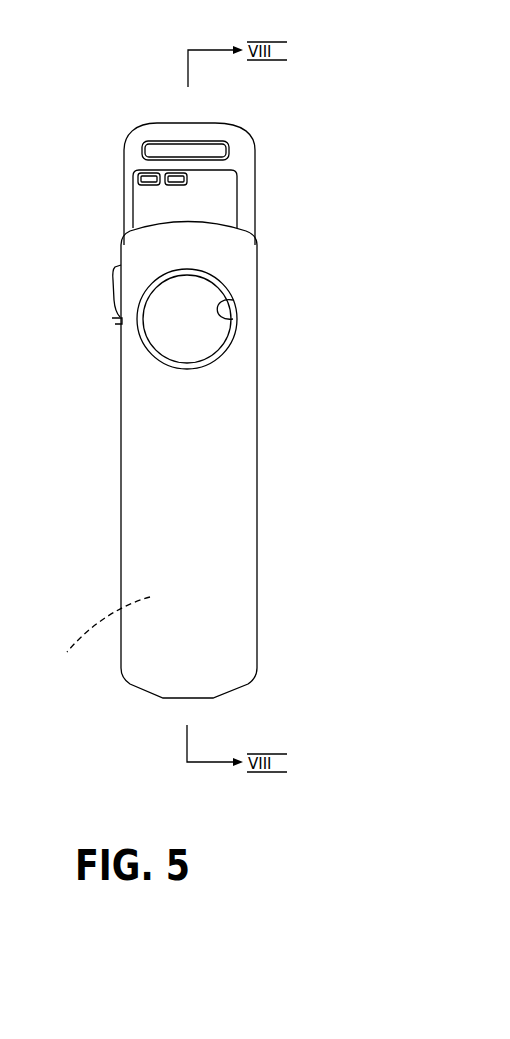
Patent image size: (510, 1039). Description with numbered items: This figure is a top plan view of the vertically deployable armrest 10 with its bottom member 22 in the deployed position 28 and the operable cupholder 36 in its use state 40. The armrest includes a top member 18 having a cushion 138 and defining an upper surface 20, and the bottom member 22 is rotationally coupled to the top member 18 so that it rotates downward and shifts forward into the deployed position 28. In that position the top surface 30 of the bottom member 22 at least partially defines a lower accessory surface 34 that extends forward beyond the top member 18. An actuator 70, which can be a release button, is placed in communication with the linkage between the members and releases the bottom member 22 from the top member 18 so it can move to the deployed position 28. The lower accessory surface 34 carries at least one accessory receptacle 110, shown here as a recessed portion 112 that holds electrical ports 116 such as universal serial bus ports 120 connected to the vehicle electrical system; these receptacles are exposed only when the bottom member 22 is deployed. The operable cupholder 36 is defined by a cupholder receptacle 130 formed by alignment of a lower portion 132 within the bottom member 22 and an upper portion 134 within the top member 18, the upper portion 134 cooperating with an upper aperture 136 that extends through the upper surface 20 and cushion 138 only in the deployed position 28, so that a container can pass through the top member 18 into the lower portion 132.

The vertically deployable armrest 10 is at (279, 548).
The top member 18 is at (237, 597).
The upper surface 20 is at (187, 660).
The bottom member 22 is at (127, 183).
The deployed position 28 is at (259, 679).
The top surface 30 is at (245, 175).
The lower accessory surface 34 is at (248, 198).
The operable cupholder 36 is at (239, 333).
The use state 40 is at (231, 371).
The actuator 70 is at (112, 282).
The accessory receptacle 110 is at (155, 148).
The recessed portion 112 is at (247, 138).
The electrical port 116 is at (143, 172).
The universal serial bus (USB) port 120 is at (177, 172).
The cupholder receptacle 130 is at (121, 314).
The lower portion 132 is at (200, 298).
The upper portion 134 is at (194, 374).
The upper aperture 136 is at (233, 301).
The cushion 138 is at (95, 636).